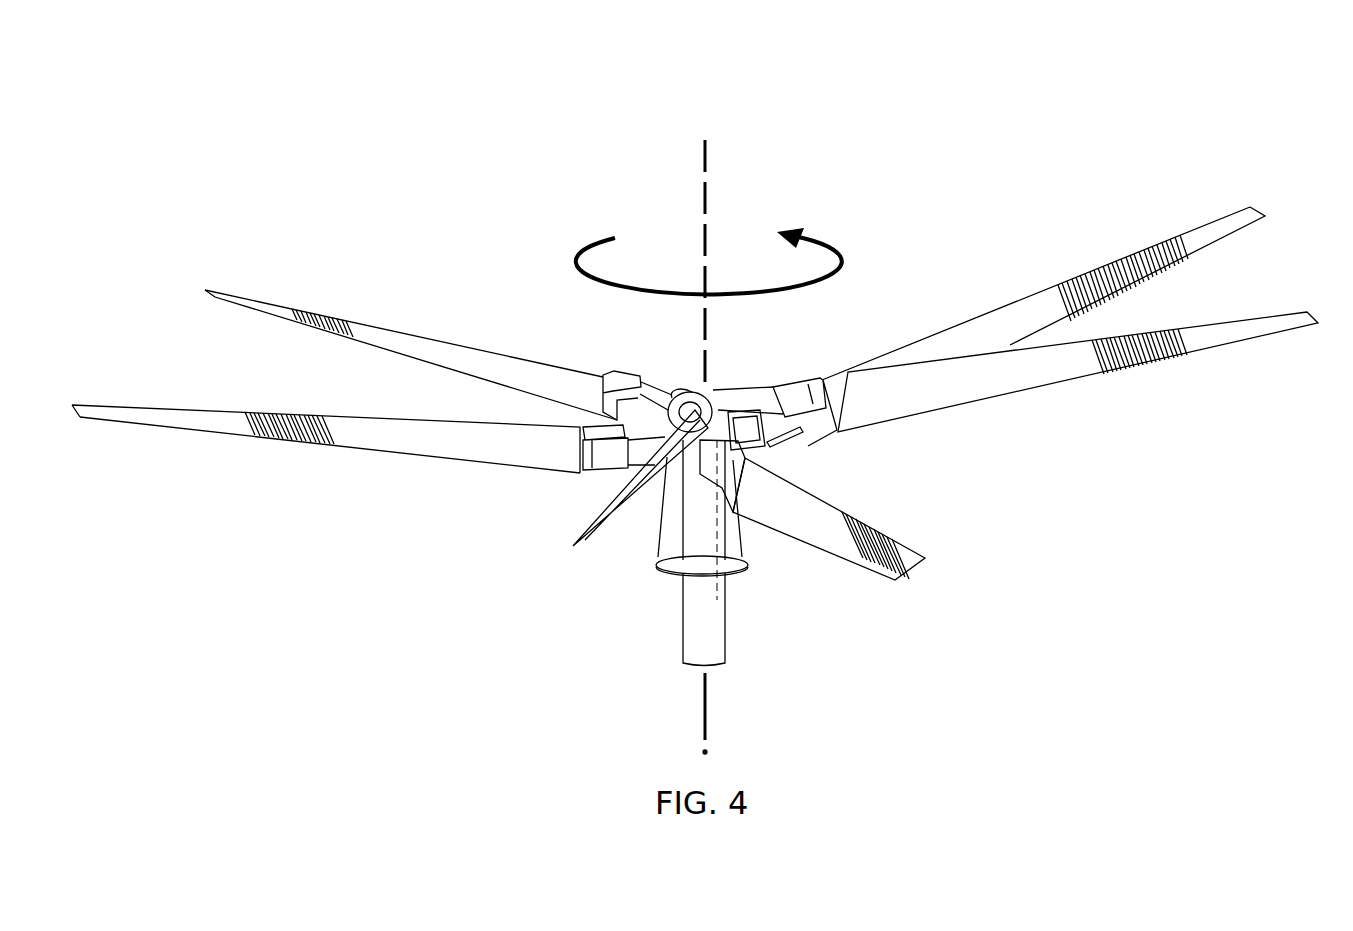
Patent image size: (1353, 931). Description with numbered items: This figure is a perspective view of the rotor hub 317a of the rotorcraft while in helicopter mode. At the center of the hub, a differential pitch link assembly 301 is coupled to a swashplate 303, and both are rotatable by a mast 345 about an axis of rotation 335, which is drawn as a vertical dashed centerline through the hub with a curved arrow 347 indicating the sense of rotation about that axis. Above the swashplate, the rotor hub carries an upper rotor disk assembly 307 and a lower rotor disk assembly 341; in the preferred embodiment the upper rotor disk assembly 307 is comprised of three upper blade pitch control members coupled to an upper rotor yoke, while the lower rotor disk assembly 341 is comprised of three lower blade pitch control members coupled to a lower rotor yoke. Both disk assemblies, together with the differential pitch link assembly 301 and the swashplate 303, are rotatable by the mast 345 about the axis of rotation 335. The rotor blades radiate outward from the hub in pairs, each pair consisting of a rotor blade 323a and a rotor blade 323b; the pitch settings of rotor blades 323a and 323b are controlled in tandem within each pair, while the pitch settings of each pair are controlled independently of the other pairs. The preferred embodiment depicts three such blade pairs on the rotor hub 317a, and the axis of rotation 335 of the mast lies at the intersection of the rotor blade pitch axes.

The differential pitch link assembly 301 is at (798, 462).
The swashplate 303 is at (705, 575).
The upper rotor disk assembly 307 is at (450, 332).
The rotor hub 317a is at (457, 118).
The rotor blade 323a is at (761, 397).
The rotor blade 323b is at (668, 385).
The axis of rotation 335 is at (705, 215).
The lower rotor disk assembly 341 is at (463, 470).
The mast 345 is at (683, 625).
The direction of rotation 347 is at (838, 263).